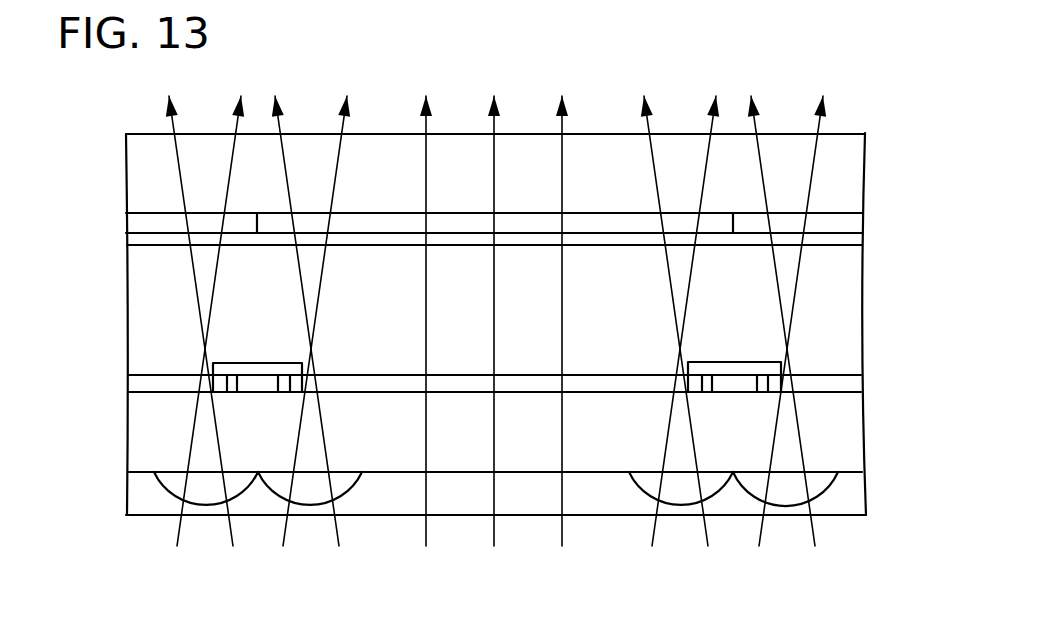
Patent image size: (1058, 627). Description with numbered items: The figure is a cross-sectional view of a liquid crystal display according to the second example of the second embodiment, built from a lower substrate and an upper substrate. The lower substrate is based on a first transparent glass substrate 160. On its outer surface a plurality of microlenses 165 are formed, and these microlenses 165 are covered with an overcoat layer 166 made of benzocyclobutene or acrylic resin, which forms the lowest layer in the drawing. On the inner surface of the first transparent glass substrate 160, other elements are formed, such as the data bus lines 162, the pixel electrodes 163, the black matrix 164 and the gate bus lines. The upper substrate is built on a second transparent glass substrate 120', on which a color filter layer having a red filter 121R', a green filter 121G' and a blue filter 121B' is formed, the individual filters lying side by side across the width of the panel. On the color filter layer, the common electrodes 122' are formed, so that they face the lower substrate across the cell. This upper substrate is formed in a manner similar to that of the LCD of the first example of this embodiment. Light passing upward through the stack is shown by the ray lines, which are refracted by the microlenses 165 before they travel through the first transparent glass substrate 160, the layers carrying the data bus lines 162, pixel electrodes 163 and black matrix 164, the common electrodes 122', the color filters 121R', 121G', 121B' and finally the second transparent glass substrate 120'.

The second transparent glass substrate 120' is at (486, 296).
The red filter 121R' is at (151, 201).
The green filter 121G' is at (495, 144).
The blue filter 121B' is at (844, 181).
The common electrodes 122' is at (533, 270).
The first transparent glass substrate 160 is at (148, 452).
The data bus lines 162 is at (250, 388).
The pixel electrodes 163 is at (368, 388).
The black matrix 164 is at (732, 372).
The microlenses 165 is at (648, 483).
The overcoat layer 166 is at (163, 503).